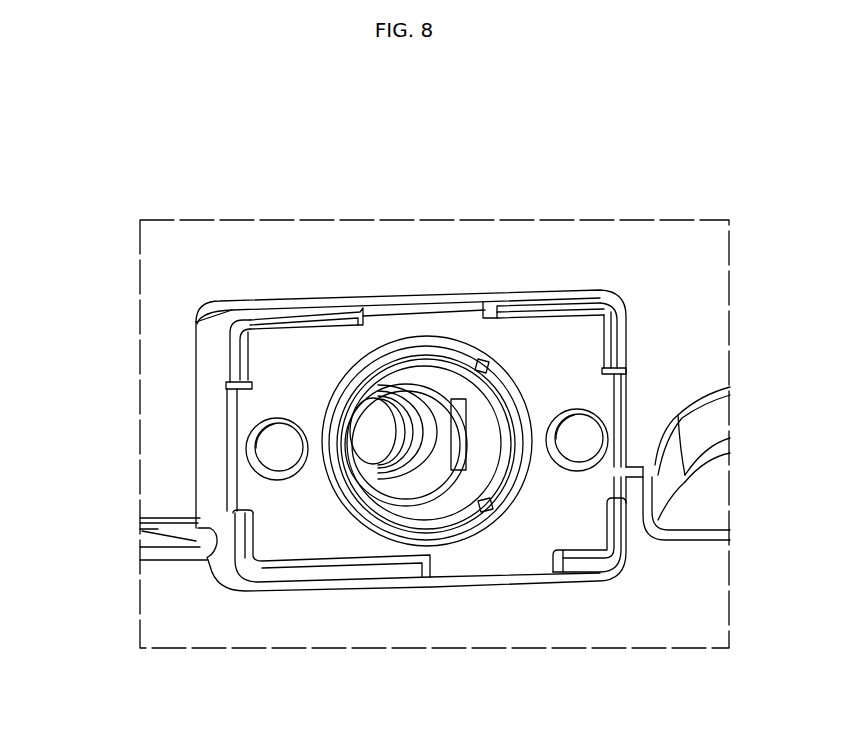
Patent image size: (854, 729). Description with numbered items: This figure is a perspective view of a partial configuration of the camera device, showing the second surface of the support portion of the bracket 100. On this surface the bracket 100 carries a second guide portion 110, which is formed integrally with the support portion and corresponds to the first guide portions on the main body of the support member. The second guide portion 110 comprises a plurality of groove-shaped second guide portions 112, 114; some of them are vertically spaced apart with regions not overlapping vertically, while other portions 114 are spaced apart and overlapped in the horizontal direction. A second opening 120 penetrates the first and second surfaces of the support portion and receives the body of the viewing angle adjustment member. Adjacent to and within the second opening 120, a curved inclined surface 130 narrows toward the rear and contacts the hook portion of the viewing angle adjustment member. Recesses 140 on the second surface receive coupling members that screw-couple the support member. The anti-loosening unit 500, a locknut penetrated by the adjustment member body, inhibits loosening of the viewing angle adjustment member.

The bracket 100 is at (207, 342).
The second guide portion 110 is at (569, 133).
The second guide portion 112 is at (443, 320).
The second guide portion 114 is at (610, 413).
The second opening 120 is at (367, 438).
The inclined surface 130 is at (462, 510).
The recess 140 is at (258, 440).
The anti-loosening unit 500 is at (427, 393).